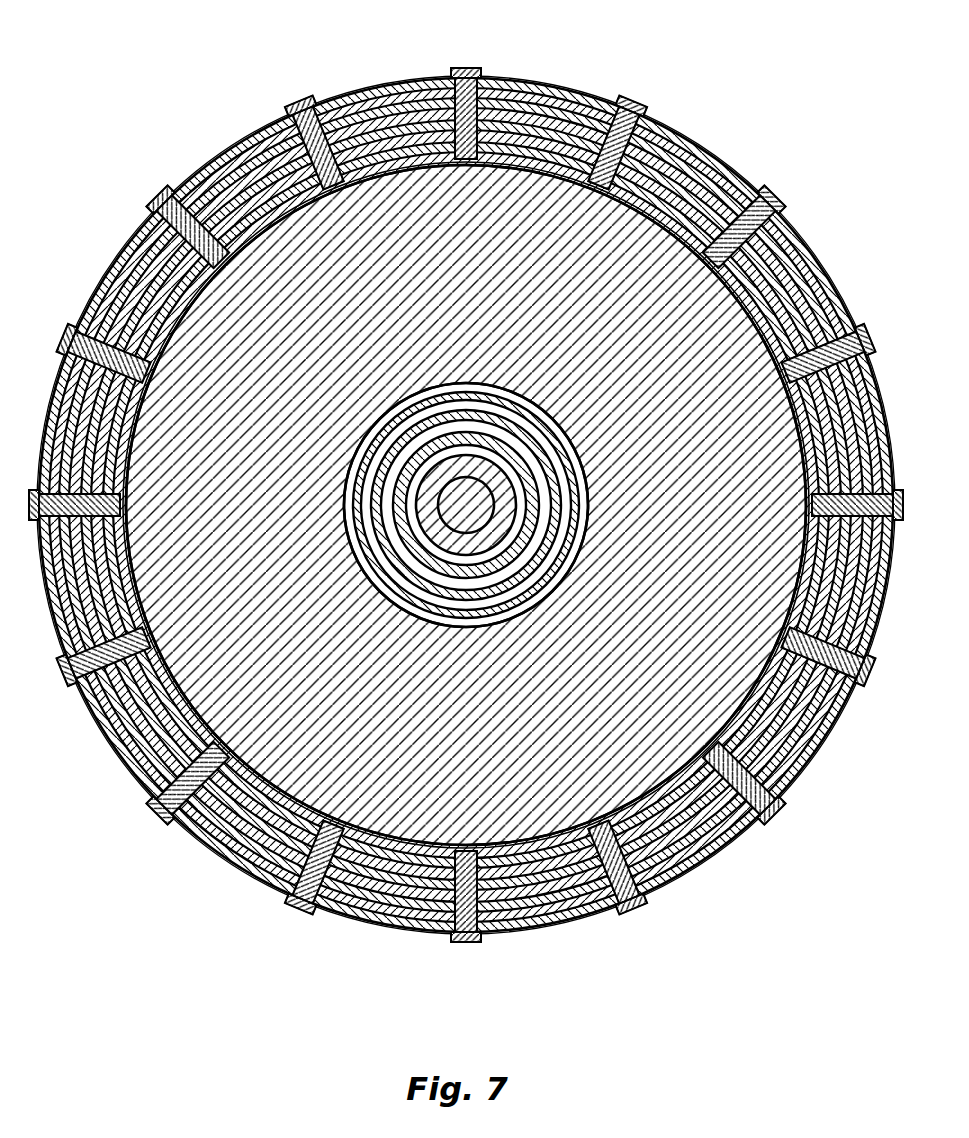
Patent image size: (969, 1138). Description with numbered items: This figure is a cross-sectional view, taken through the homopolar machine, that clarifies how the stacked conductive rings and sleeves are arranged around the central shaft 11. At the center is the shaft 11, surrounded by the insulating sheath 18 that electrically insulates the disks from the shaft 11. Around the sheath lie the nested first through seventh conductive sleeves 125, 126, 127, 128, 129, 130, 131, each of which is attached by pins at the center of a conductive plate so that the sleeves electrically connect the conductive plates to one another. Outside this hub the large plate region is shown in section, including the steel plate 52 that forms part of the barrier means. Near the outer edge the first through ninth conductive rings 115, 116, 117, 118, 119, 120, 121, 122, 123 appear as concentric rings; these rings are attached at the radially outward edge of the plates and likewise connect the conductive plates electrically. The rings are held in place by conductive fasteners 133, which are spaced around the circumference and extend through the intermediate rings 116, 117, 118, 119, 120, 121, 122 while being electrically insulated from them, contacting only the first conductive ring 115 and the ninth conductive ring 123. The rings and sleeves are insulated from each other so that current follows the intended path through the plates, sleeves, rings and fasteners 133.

The shaft 11 is at (677, 317).
The insulating sheath 18 is at (530, 395).
The steel plate 52 is at (695, 215).
The first conductive ring 115 is at (247, 870).
The second conductive ring 116 is at (323, 912).
The third conductive ring 117 is at (374, 923).
The fourth conductive ring 118 is at (450, 940).
The fifth conductive ring 119 is at (521, 930).
The sixth conductive ring 120 is at (567, 923).
The seventh conductive ring 121 is at (662, 895).
The eighth conductive ring 122 is at (697, 868).
The ninth conductive ring 123 is at (727, 857).
The first conductive sleeve 125 is at (203, 167).
The second conductive sleeve 126 is at (362, 430).
The third conductive sleeve 127 is at (397, 420).
The fourth conductive sleeve 128 is at (455, 400).
The fifth conductive sleeve 129 is at (452, 385).
The sixth conductive sleeve 130 is at (478, 395).
The seventh conductive sleeve 131 is at (500, 385).
The conductive fasteners 133 is at (780, 190).